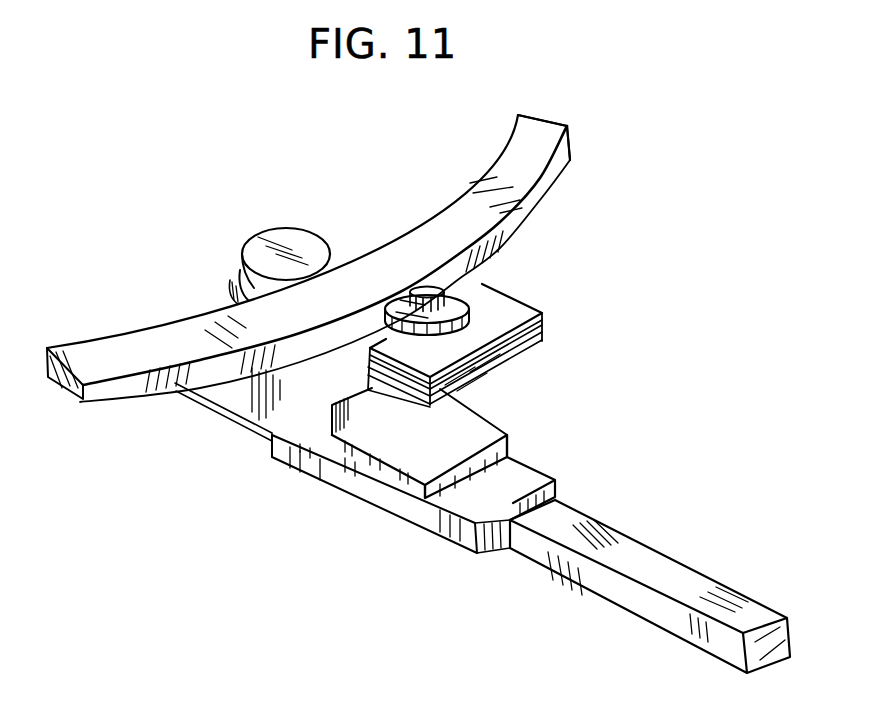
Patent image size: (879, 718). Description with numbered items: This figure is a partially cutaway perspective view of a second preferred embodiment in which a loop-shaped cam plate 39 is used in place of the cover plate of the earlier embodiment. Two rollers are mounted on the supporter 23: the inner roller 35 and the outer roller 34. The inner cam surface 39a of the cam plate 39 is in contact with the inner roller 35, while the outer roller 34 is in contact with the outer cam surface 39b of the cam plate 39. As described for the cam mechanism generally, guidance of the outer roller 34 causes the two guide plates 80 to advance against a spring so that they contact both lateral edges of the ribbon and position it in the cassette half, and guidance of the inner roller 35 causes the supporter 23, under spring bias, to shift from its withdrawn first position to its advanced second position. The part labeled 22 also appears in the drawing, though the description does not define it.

The cam plate 39 is at (460, 205).
The inner cam surface 39a is at (167, 323).
The outer cam surface 39b is at (563, 170).
The inner roller 35 is at (288, 240).
The guide plates 80 is at (495, 297).
The outer roller 34 is at (463, 333).
The supporter 23 is at (537, 303).
The lead arm 22 is at (568, 578).